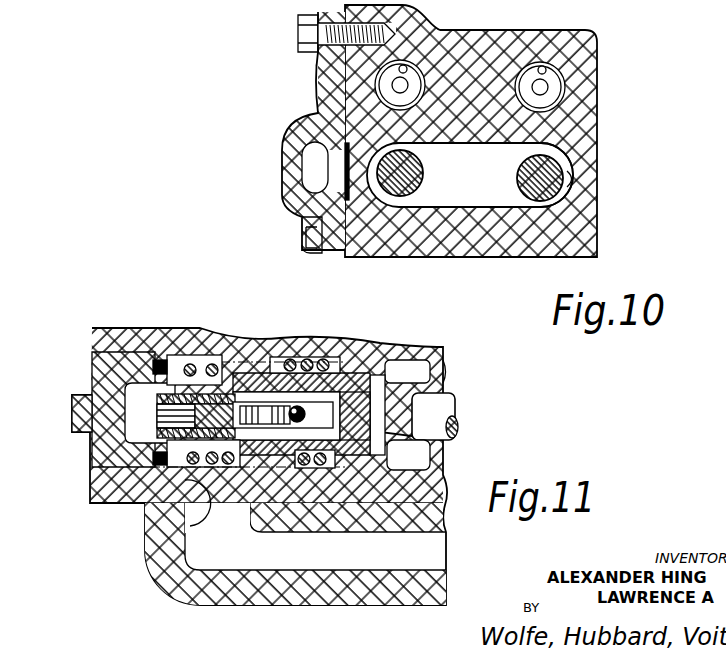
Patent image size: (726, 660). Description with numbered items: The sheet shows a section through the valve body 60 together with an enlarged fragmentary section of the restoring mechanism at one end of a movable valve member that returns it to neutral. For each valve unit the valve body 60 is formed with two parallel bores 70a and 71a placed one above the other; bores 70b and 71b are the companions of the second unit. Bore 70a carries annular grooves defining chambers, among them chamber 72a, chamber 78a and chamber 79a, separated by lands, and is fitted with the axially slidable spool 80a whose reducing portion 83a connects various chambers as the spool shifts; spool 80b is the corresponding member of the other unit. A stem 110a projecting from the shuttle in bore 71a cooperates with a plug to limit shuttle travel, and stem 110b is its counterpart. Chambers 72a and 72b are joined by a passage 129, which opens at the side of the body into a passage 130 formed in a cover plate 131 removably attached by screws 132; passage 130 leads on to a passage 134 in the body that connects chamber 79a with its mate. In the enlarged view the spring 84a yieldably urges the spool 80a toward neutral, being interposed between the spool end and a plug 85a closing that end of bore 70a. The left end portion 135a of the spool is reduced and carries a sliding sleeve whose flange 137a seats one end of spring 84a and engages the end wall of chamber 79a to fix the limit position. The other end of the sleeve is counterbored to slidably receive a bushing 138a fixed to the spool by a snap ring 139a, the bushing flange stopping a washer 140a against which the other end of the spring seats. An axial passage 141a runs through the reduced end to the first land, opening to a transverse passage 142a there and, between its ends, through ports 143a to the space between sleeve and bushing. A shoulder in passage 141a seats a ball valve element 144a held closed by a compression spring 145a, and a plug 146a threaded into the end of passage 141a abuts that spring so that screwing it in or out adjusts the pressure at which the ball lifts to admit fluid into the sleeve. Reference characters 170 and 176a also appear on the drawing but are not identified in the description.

In FIG. 10, the valve body 60 is at (577, 140).
In FIG. 11, the valve body 60 is at (95, 488).
In FIG. 10, the bore 70a is at (418, 168).
In FIG. 11, the bore 70a is at (446, 383).
In FIG. 10, the passage 70b is at (525, 180).
In FIG. 10, the bore 71a is at (403, 69).
In FIG. 10, the notch 71b is at (542, 68).
In FIG. 10, the chamber 72a is at (345, 143).
In FIG. 10, the chamber 72b is at (572, 176).
In FIG. 11, the chamber 78a is at (437, 450).
In FIG. 11, the valve chamber 79a is at (297, 533).
In FIG. 10, the spool 80a is at (405, 180).
In FIG. 11, the spool 80a is at (459, 427).
In FIG. 10, the port 80b is at (545, 187).
In FIG. 11, the reducing portion 83a is at (445, 407).
In FIG. 11, the spring 84a is at (213, 364).
In FIG. 11, the plug 85a is at (112, 442).
In FIG. 10, the stem 110a is at (398, 85).
In FIG. 10, the bore 110b is at (543, 88).
In FIG. 10, the passage 129 is at (483, 205).
In FIG. 11, the passage 130 is at (372, 563).
In FIG. 10, the cover plate 131 is at (303, 197).
In FIG. 11, the cover plate 131 is at (248, 588).
In FIG. 10, the screws 132 is at (300, 35).
In FIG. 11, the passage 134 is at (200, 503).
In FIG. 11, the left end portion of the spool 135a is at (318, 392).
In FIG. 11, the flange 137a is at (354, 412).
In FIG. 11, the bushing 138a is at (216, 470).
In FIG. 11, the snap ring 139a is at (157, 394).
In FIG. 11, the washer 140a is at (186, 364).
In FIG. 11, the axial passage 141a is at (378, 388).
In FIG. 11, the transverse passage 142a is at (427, 350).
In FIG. 11, the ports 143a is at (228, 464).
In FIG. 11, the ball valve element 144a is at (296, 406).
In FIG. 11, the compression spring 145a is at (240, 392).
In FIG. 11, the plug 146a is at (157, 393).
In FIG. 10, the slot 170 is at (308, 172).
In FIG. 11, the seal 176a is at (273, 372).